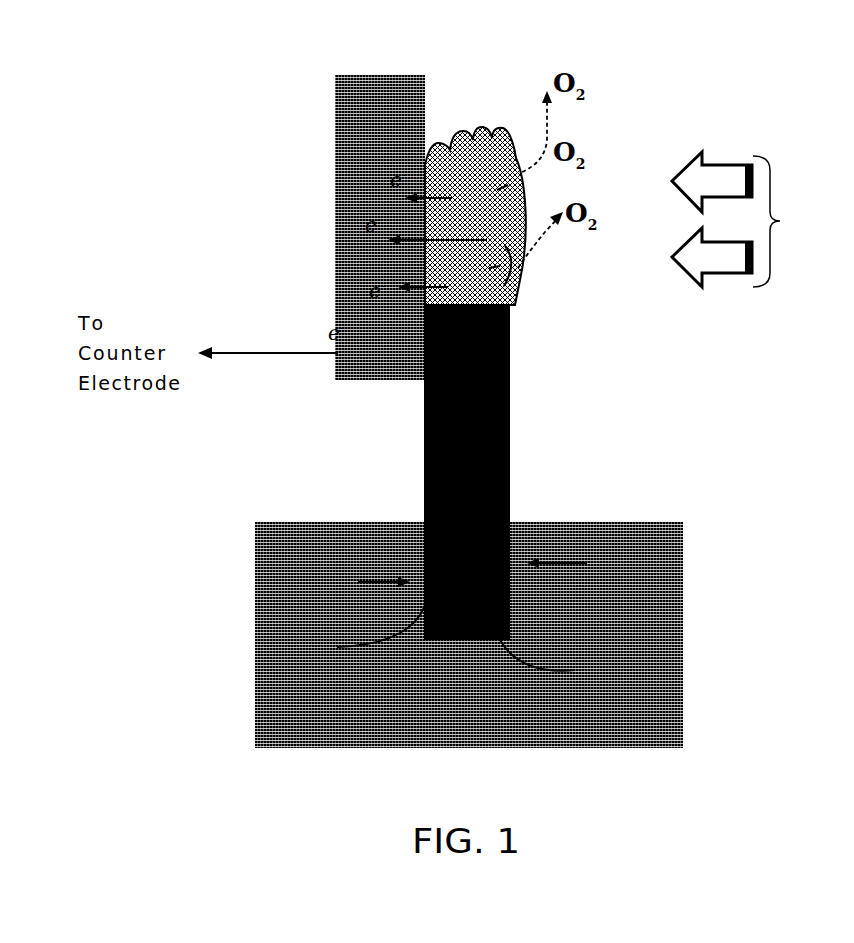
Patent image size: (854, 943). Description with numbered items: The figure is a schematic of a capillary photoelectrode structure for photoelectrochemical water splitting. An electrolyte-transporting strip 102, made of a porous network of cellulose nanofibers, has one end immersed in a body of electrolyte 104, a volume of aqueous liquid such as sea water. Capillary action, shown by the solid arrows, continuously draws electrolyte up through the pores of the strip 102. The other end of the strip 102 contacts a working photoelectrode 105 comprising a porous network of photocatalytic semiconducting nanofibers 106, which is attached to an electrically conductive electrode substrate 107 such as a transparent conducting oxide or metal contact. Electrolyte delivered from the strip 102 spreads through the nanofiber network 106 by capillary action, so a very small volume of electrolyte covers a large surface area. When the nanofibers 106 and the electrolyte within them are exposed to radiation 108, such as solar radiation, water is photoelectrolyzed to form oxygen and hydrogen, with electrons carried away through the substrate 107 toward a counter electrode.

The electrolyte-transporting strip 102 is at (412, 447).
The body of electrolyte 104 is at (637, 632).
The working photoelectrode 105 is at (284, 122).
The photocatalytic semiconducting nanofibers 106 is at (472, 118).
The electrically conductive electrode substrate 107 is at (400, 110).
The radiation 108 is at (755, 219).